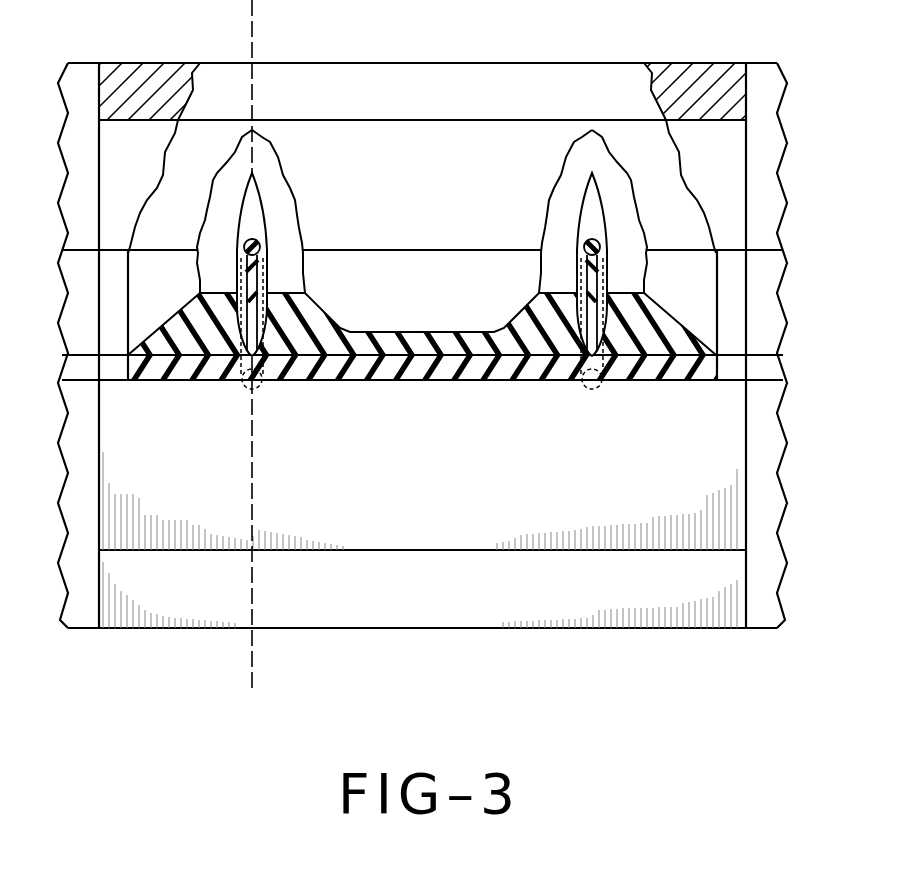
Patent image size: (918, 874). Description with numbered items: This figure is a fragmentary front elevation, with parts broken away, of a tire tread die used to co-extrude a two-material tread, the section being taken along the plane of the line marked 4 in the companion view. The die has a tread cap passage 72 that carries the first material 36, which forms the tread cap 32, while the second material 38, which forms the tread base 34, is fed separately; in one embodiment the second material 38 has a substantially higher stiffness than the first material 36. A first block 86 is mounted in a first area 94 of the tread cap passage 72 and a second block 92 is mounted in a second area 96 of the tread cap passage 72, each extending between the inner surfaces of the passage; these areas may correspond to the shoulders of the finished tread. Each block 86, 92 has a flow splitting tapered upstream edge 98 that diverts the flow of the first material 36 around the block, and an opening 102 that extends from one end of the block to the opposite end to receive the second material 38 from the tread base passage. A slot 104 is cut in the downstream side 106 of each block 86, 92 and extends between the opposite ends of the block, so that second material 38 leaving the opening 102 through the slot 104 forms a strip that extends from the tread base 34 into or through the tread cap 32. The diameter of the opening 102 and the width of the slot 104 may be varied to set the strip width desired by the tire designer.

The section line for FIG. 4 is at (302, 672).
The tread cap 32 is at (462, 342).
The tread base 34 is at (466, 367).
The first material 36 is at (400, 342).
The second material 38 is at (381, 367).
The tread cap passage 72 is at (569, 188).
The first block 86 is at (260, 297).
The second block 92 is at (584, 297).
The first area 94 is at (212, 397).
The second area 96 is at (632, 397).
The flow splitting tapered upstream edge 98 is at (594, 172).
The opening 102 is at (586, 241).
The slot 104 is at (596, 308).
The downstream side 106 is at (597, 292).